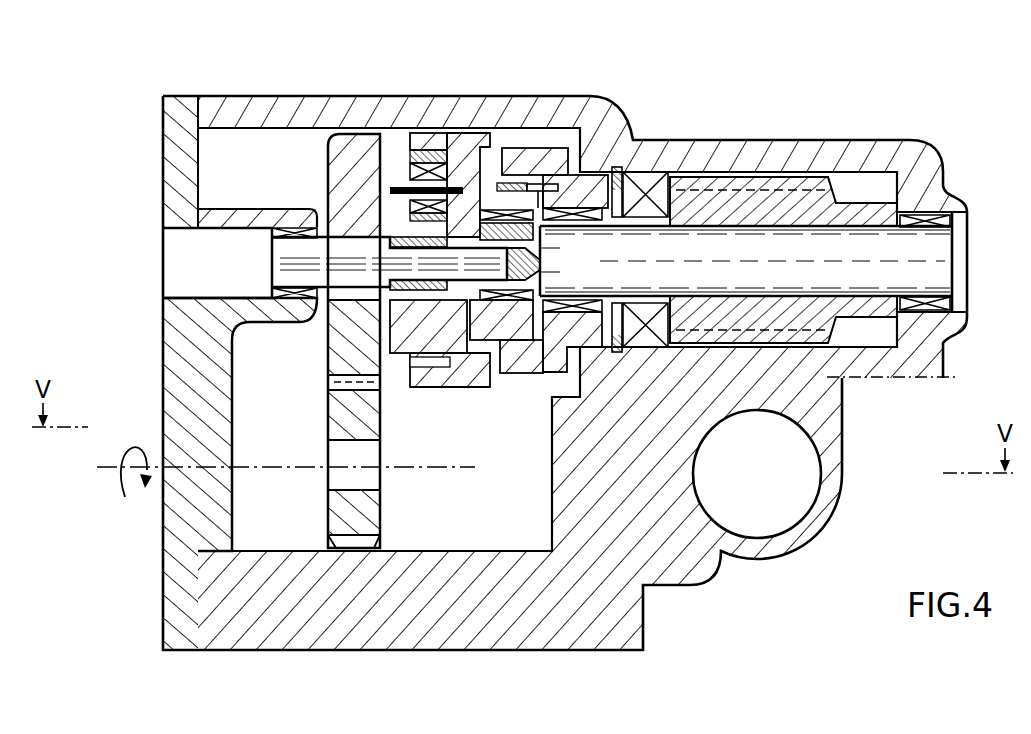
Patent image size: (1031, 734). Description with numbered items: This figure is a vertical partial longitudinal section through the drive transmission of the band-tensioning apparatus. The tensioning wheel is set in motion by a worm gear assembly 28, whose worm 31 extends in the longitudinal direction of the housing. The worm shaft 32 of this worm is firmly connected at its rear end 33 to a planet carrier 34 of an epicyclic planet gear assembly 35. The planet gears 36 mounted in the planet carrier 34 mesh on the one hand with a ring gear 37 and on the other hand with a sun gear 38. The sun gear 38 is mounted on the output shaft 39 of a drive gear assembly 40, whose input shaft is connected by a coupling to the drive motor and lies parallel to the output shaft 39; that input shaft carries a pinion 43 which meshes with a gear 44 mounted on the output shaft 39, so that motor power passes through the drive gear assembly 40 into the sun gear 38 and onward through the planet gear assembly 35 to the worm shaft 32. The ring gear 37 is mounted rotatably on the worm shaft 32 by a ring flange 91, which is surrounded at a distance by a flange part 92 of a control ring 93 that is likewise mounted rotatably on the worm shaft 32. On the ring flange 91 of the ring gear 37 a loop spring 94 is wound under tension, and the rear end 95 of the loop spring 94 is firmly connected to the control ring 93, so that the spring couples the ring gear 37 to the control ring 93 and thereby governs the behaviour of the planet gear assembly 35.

The worm gear assembly 28 is at (859, 324).
The worm 31 is at (770, 207).
The worm shaft 32 is at (925, 248).
The rear end 33 is at (577, 277).
The planet carrier 34 is at (455, 128).
The planet gear assembly 35 is at (427, 96).
The planet gears 36 is at (372, 140).
The ring gear 37 is at (418, 130).
The sun gear 38 is at (447, 290).
The output shaft 39 is at (274, 272).
The drive gear assembly 40 is at (317, 341).
The pinion 43 is at (335, 502).
The gear 44 is at (337, 180).
The ring flange 91 is at (534, 360).
The flange part 92 is at (512, 360).
The control ring 93 is at (617, 165).
The loop spring 94 is at (515, 182).
The rear end 95 is at (555, 150).